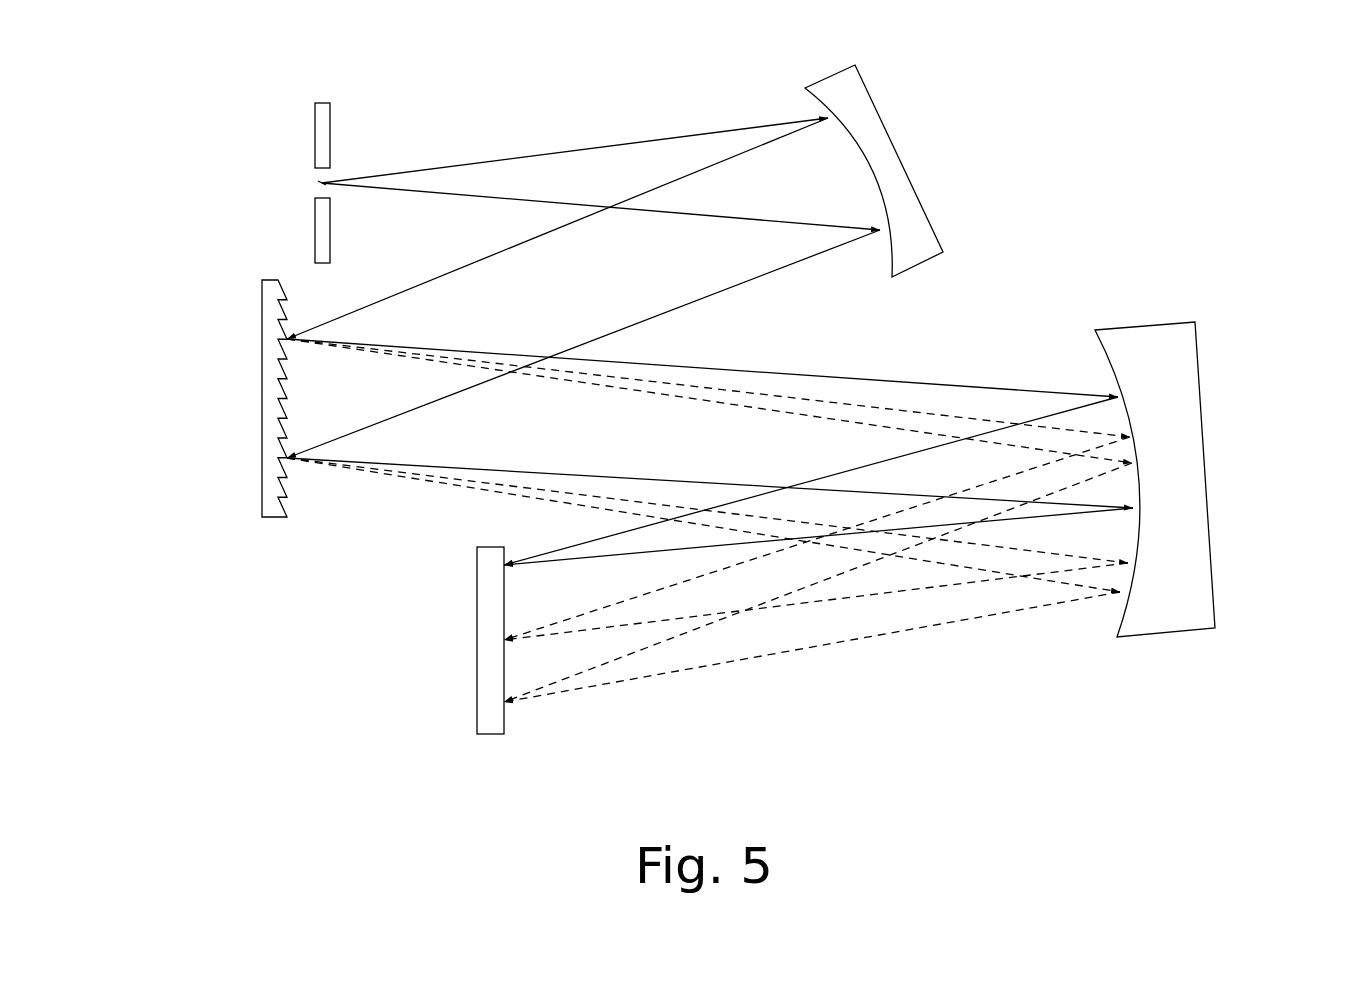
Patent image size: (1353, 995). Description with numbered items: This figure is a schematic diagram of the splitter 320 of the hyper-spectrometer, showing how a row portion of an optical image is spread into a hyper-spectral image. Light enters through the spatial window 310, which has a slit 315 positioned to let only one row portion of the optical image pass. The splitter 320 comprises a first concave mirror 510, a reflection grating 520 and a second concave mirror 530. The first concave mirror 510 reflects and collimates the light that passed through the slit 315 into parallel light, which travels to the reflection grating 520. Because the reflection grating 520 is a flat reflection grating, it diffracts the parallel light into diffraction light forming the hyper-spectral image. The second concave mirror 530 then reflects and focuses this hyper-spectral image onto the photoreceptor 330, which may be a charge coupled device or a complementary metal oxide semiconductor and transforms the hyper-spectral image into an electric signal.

The splitter 320 is at (192, 56).
The spatial window 310 is at (322, 101).
The slit 315 is at (316, 182).
The first concave mirror 510 is at (902, 158).
The reflection grating 520 is at (260, 398).
The second concave mirror 530 is at (1212, 475).
The photoreceptor 330 is at (477, 642).